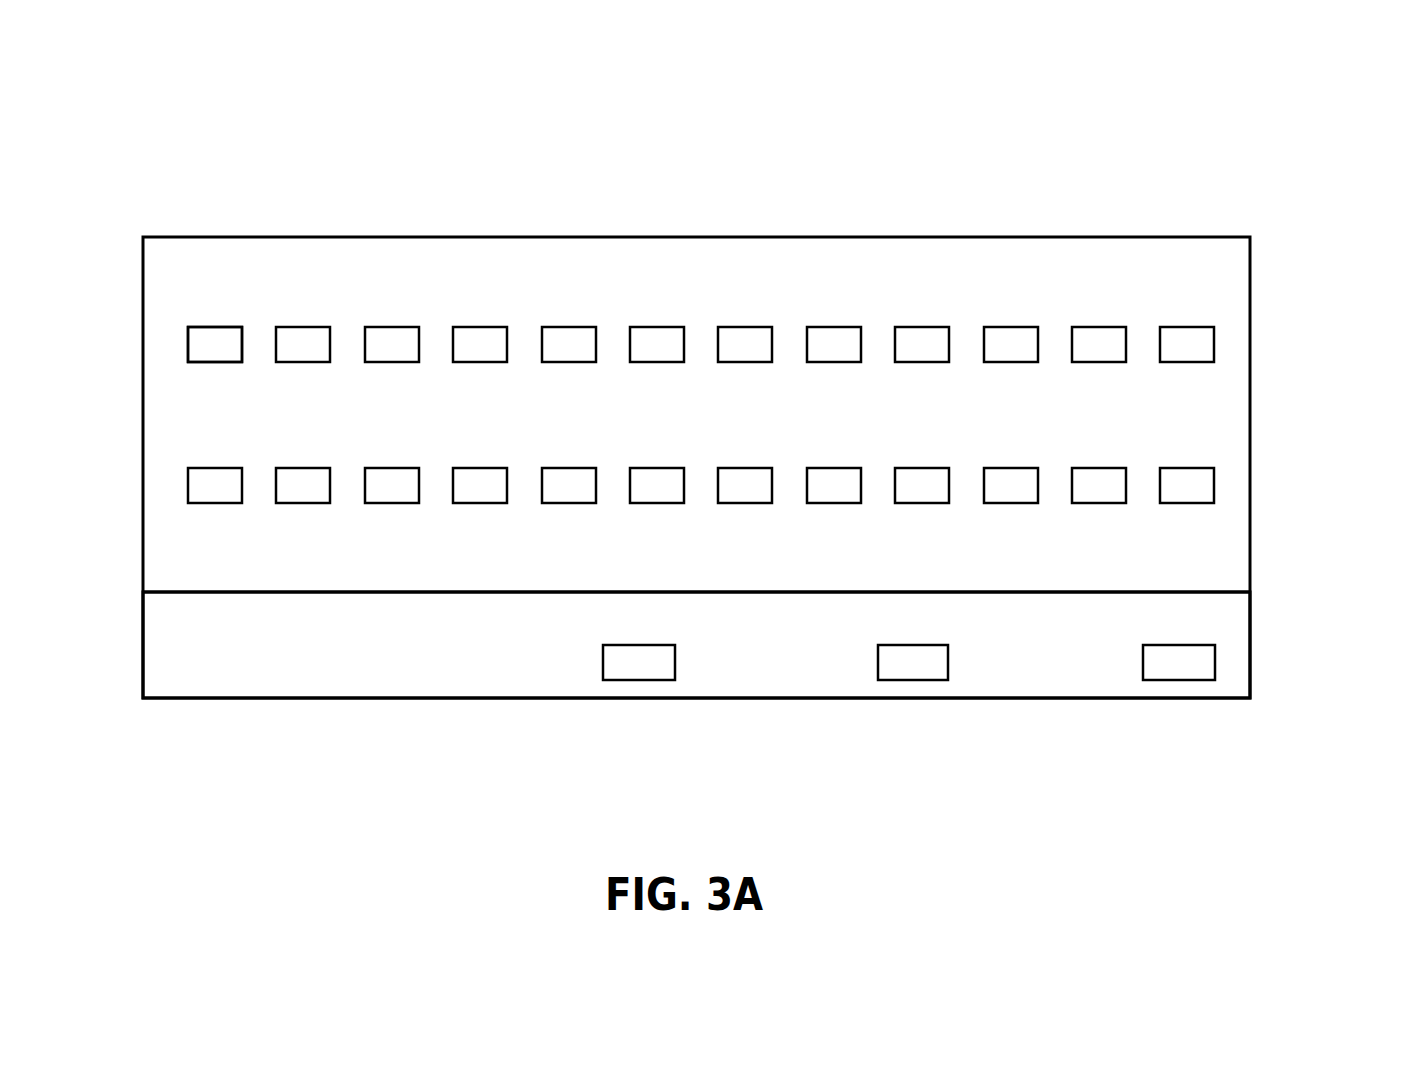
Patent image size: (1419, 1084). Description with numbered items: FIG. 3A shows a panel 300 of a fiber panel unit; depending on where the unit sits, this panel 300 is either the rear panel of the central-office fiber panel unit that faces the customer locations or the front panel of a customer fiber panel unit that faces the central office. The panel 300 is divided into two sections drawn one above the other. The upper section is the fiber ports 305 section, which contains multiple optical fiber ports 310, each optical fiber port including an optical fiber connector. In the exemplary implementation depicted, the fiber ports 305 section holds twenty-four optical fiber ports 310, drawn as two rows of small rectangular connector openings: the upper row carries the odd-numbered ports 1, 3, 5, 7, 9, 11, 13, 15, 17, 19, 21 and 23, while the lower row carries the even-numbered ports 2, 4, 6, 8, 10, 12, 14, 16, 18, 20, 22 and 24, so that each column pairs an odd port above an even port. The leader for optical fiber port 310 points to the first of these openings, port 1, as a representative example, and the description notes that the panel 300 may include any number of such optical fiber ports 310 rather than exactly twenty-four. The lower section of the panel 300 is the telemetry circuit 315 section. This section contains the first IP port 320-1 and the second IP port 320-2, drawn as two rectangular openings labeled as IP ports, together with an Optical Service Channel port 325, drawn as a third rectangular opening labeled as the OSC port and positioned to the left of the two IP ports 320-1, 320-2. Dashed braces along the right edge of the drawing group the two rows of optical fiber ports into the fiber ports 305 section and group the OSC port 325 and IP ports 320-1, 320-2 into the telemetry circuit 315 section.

The panel 300 is at (222, 128).
The fiber ports section 305 is at (776, 401).
The optical fiber port 310 is at (168, 344).
The telemetry circuit section 315 is at (1260, 708).
The IP port 320-1 is at (913, 702).
The IP port 320-2 is at (1179, 702).
The Optical Service Channel (OSC) port 325 is at (639, 702).
The fiber port 1 is at (215, 325).
The fiber port 2 is at (215, 466).
The fiber port 3 is at (303, 325).
The fiber port 4 is at (303, 466).
The fiber port 5 is at (392, 325).
The fiber port 6 is at (392, 466).
The fiber port 7 is at (480, 325).
The fiber port 8 is at (480, 466).
The fiber port 9 is at (569, 325).
The fiber port 10 is at (569, 466).
The fiber port 11 is at (657, 325).
The fiber port 12 is at (657, 466).
The fiber port 13 is at (745, 325).
The fiber port 14 is at (745, 466).
The fiber port 15 is at (834, 325).
The fiber port 16 is at (834, 466).
The fiber port 17 is at (922, 325).
The fiber port 18 is at (922, 466).
The fiber port 19 is at (1011, 325).
The fiber port 20 is at (1011, 466).
The fiber port 21 is at (1099, 325).
The fiber port 22 is at (1099, 466).
The fiber port 23 is at (1187, 325).
The fiber port 24 is at (1187, 466).